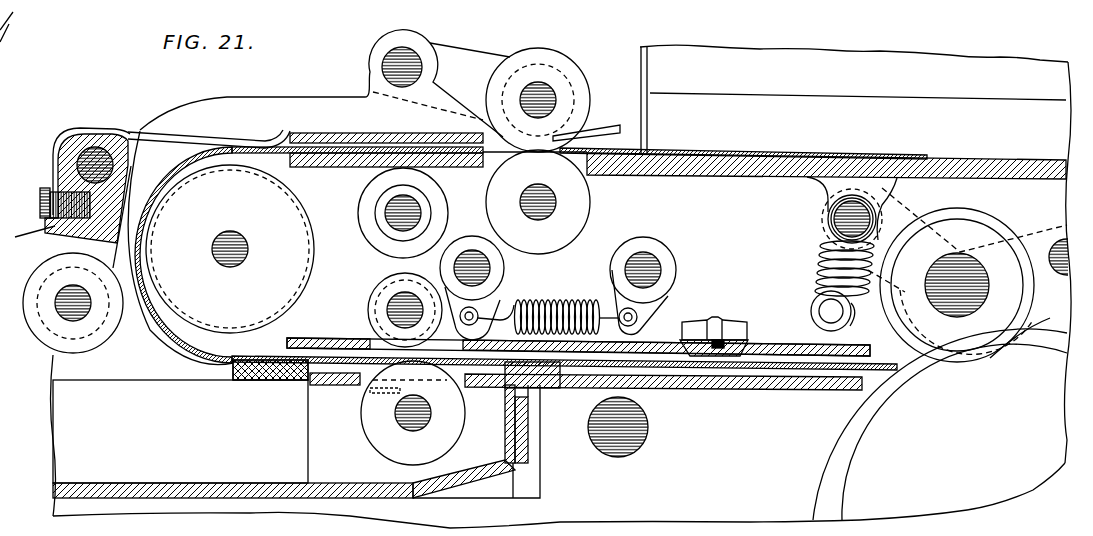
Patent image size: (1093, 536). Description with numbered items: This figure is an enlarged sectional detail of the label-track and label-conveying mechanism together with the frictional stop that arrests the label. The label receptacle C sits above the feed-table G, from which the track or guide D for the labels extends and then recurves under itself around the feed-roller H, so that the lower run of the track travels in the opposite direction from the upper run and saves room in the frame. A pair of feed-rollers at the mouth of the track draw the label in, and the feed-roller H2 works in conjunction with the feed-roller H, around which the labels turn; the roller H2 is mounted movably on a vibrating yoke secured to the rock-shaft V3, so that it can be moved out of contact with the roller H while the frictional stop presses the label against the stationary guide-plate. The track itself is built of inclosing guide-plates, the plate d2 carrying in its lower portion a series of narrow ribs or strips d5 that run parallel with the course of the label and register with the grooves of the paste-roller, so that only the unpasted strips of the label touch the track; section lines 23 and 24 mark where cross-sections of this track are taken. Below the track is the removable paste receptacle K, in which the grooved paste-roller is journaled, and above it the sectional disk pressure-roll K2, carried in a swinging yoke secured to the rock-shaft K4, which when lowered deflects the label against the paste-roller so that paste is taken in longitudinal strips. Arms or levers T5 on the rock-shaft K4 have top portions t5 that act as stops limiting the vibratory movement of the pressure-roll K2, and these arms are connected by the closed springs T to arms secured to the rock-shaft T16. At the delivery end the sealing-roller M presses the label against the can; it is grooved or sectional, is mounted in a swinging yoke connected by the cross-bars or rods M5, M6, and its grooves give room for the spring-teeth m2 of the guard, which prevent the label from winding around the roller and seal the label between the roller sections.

The label receptacle C is at (748, 93).
The feed-table G is at (963, 162).
The rock-shaft V3 is at (93, 152).
The feed-roller H2 is at (73, 303).
The feed-roller H is at (230, 249).
The section line 23 is at (334, 185).
The top portions of arms t5 is at (381, 225).
The sectional disk pressure-roll K2 is at (390, 276).
The rock-shaft K4 is at (490, 262).
The arms or levers T5 is at (488, 307).
The closed springs T is at (560, 302).
The rock-shaft T16 is at (661, 264).
The section line 24 is at (665, 402).
The label-track D is at (737, 363).
The guide-plate d2 is at (758, 383).
The narrow ribs or strips d5 is at (790, 369).
The paste receptacle K is at (558, 441).
The cross-bar or rod M5 is at (832, 220).
The sealing-roller M is at (967, 275).
The cross-bar or rod M6 is at (1066, 241).
The spring-teeth m2 is at (1020, 325).